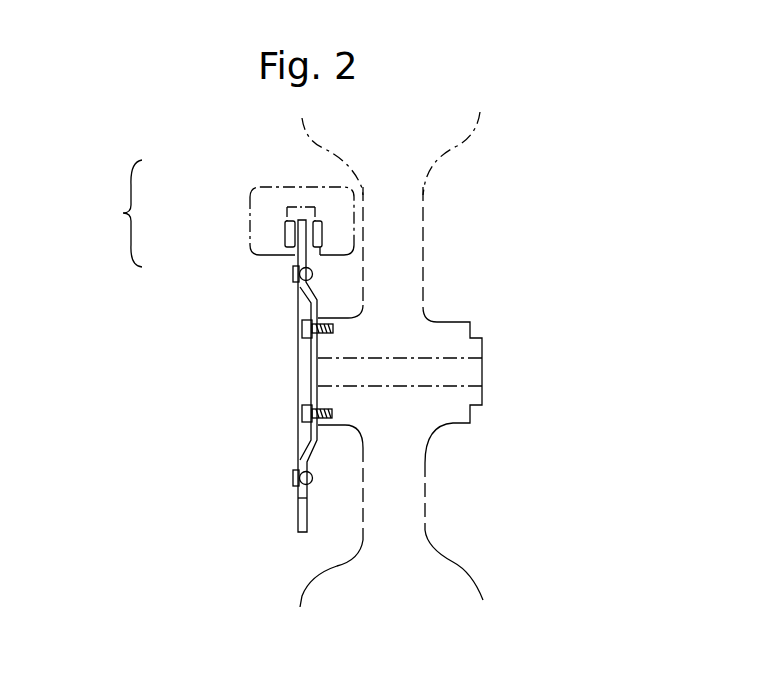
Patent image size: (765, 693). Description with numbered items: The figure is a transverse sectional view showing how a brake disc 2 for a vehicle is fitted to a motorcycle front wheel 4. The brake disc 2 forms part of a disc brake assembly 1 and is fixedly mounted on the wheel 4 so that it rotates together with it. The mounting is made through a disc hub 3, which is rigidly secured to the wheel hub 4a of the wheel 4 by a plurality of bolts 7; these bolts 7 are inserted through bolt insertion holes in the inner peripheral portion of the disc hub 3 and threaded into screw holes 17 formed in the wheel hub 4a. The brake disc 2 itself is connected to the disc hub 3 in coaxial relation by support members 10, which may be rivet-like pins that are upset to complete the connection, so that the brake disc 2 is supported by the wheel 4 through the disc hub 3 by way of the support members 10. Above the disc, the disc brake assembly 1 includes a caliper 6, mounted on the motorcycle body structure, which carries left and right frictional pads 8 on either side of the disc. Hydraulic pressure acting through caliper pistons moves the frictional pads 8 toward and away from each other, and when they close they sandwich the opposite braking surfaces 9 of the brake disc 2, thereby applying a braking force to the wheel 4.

The disc brake assembly 1 is at (122, 213).
The brake disc 2 is at (300, 250).
The disc hub 3 is at (298, 307).
The wheel 4 is at (394, 359).
The wheel hub 4a is at (355, 342).
The caliper 6 is at (250, 193).
The bolts 7 is at (300, 330).
The frictional pads 8 is at (323, 221).
The braking surfaces 9 is at (285, 230).
The support members 10 is at (293, 273).
The screw holes 17 is at (323, 318).